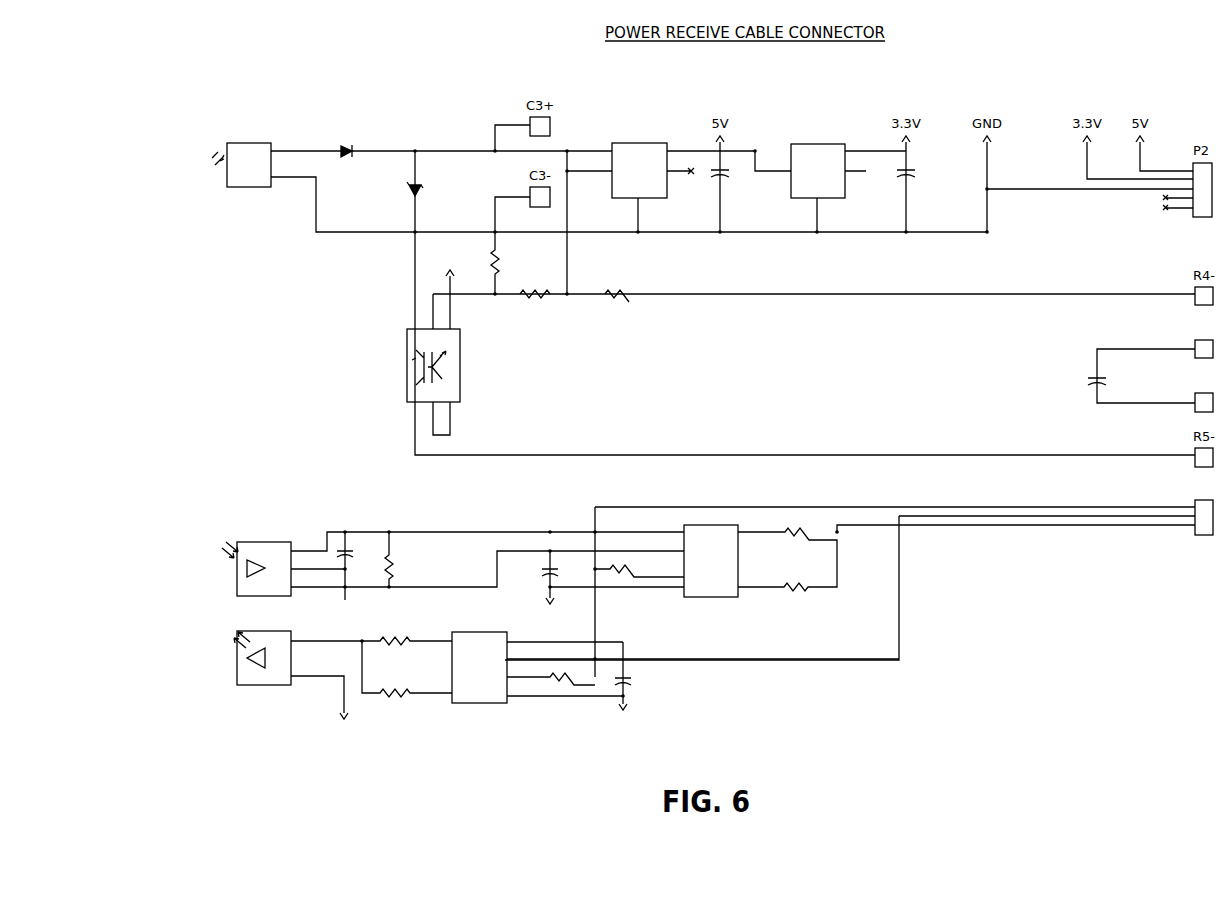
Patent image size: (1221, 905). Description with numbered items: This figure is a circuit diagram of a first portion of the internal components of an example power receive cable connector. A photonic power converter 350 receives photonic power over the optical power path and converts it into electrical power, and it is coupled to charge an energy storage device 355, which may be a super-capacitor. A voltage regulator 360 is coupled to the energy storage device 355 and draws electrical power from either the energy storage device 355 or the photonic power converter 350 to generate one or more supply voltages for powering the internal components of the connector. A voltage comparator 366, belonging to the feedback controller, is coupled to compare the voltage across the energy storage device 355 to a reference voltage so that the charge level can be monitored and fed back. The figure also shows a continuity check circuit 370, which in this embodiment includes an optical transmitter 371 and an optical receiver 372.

The photonic power converter 350 is at (248, 186).
The energy storage device 355 is at (1084, 375).
The voltage regulator 360 is at (798, 139).
The voltage comparator 366 is at (465, 368).
The continuity check circuit 370 is at (911, 662).
The optical transmitter 371 is at (241, 688).
The optical receiver 372 is at (241, 540).